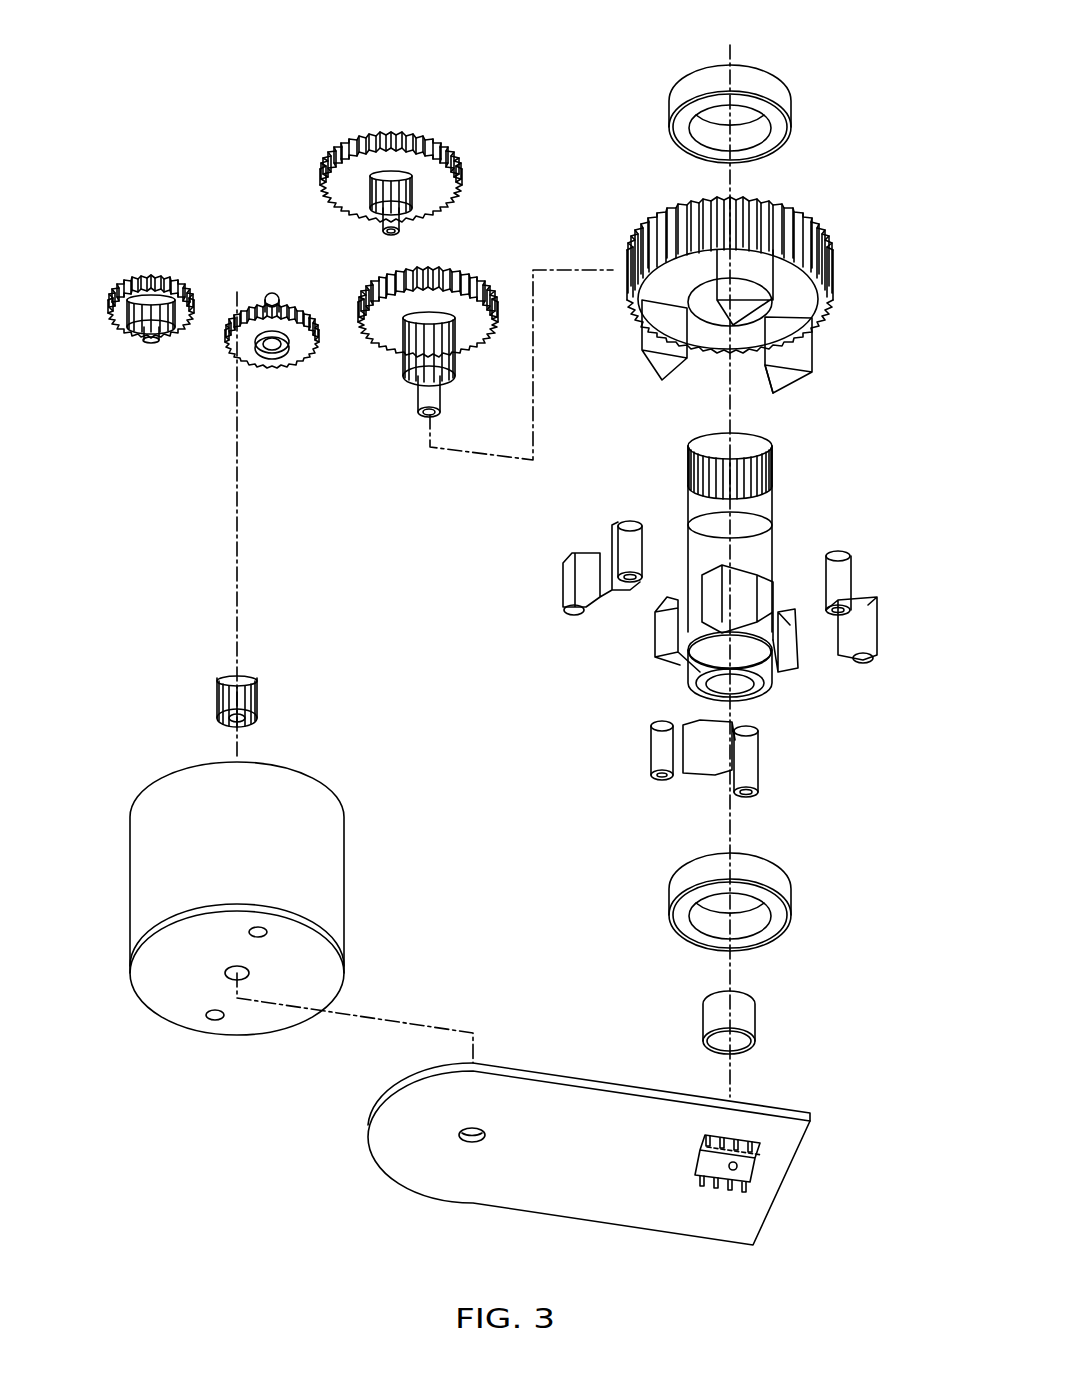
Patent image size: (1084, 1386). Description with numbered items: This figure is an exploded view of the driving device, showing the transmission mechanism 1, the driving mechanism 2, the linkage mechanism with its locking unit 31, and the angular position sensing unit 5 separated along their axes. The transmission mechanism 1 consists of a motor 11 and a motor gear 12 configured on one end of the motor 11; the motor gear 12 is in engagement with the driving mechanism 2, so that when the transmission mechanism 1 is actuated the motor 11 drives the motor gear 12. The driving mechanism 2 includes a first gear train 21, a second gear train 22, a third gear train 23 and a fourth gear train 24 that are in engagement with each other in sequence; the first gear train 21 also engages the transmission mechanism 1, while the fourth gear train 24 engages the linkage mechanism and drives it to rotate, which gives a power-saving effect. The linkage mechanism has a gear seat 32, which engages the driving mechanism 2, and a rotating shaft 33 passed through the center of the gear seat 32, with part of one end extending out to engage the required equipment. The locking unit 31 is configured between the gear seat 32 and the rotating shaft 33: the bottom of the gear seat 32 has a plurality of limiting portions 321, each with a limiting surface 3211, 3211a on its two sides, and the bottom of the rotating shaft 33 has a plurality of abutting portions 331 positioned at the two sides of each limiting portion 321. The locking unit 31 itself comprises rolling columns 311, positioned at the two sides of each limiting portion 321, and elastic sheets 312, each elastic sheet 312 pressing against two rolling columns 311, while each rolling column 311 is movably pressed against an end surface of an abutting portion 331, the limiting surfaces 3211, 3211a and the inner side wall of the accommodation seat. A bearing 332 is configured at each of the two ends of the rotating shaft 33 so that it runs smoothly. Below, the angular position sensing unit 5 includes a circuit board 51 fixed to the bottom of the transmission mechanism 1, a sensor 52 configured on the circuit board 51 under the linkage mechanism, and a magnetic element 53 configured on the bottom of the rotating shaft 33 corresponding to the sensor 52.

The transmission mechanism 1 is at (192, 855).
The motor 11 is at (143, 904).
The motor gear 12 is at (218, 691).
The driving mechanism 2 is at (162, 68).
The first gear train 21 is at (124, 265).
The second gear train 22 is at (258, 280).
The third gear train 23 is at (456, 129).
The fourth gear train 24 is at (497, 262).
The locking unit 31 is at (722, 636).
The rolling column 311 is at (628, 530).
The elastic sheet 312 is at (585, 565).
The gear seat 32 is at (767, 326).
The limiting portion 321 is at (774, 353).
The limiting surface 3211 is at (800, 350).
The limiting surface 3211a is at (768, 392).
The rotating shaft 33 is at (752, 497).
The abutting portion 331 is at (783, 668).
The bearing 332 is at (786, 97).
The angular position sensing unit 5 is at (568, 1175).
The circuit board 51 is at (652, 1212).
The sensor 52 is at (755, 1172).
The magnetic element 53 is at (750, 1015).